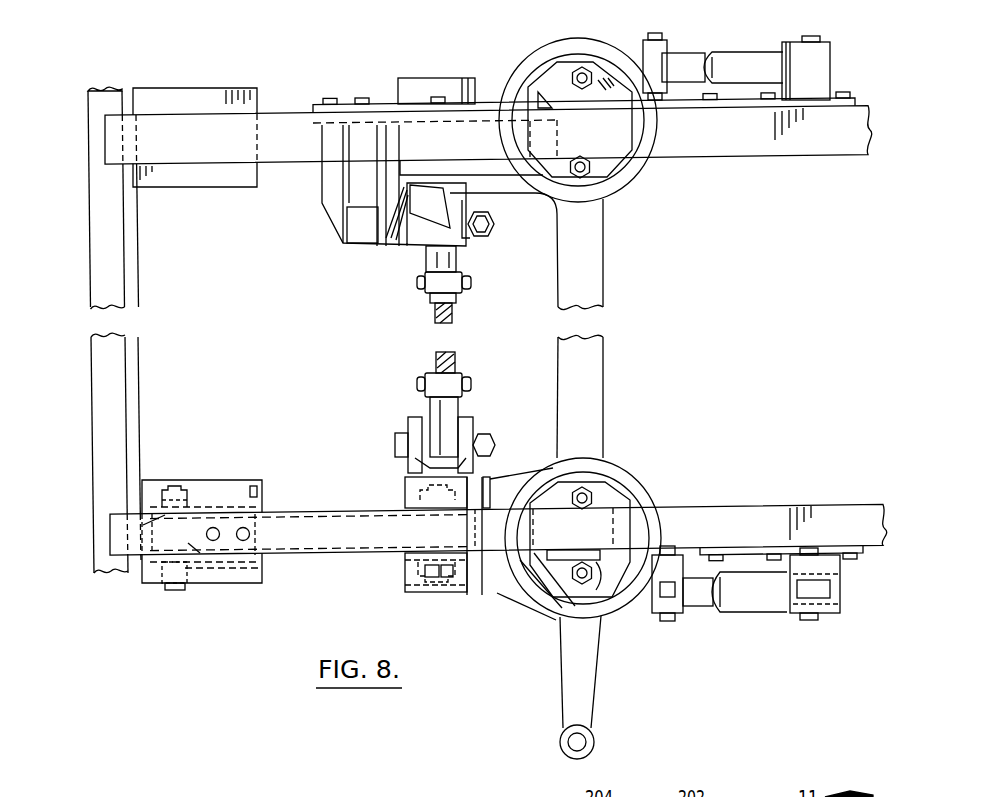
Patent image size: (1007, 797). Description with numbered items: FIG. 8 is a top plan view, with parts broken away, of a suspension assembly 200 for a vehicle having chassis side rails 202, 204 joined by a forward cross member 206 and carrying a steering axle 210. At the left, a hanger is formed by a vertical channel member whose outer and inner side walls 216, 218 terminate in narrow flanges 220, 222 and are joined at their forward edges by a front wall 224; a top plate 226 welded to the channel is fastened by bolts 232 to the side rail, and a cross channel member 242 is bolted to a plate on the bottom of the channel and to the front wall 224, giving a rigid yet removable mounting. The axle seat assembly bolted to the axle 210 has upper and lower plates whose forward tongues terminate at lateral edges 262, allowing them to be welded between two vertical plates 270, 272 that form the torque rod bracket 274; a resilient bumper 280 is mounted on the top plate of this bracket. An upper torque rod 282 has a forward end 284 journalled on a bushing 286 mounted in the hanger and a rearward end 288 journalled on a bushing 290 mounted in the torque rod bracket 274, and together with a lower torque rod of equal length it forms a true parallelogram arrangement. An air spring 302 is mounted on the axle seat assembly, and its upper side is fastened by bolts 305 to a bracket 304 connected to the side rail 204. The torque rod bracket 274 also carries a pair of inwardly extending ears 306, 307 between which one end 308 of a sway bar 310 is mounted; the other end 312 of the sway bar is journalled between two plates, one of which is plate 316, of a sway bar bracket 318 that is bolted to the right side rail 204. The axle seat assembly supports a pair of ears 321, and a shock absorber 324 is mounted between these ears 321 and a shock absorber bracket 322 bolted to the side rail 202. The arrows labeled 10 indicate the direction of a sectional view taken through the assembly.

The section line 10- 10 is at (87, 303).
The suspension assembly 200 is at (327, 586).
The chassis side rail 202 is at (728, 512).
The chassis side rail 204 is at (710, 148).
The forward cross member 206 is at (93, 307).
The steering axle 210 is at (604, 320).
The outer side wall 216 is at (215, 568).
The inner side wall 218 is at (213, 503).
The narrow flange 220 is at (250, 573).
The narrow flange 222 is at (257, 492).
The front wall 224 is at (140, 543).
The top plate 226 is at (202, 488).
The bolts 232 is at (248, 533).
The cross channel member 242 is at (133, 358).
The lateral edges 262 is at (476, 600).
The vertical plate 270 is at (400, 577).
The vertical plate 272 is at (407, 480).
The torque rod bracket 274 is at (412, 604).
The resilient bumper 280 is at (437, 590).
The upper torque rod 282 is at (405, 508).
The forward end 284 is at (170, 527).
The bushing 286 is at (168, 592).
The rearward end 288 is at (403, 553).
The bushing 290 is at (452, 595).
The air spring 302 is at (622, 184).
The bracket 304 is at (539, 606).
The bolts 305 is at (594, 588).
The ear 306 is at (430, 418).
The ear 307 is at (487, 428).
The end of sway bar 308 is at (430, 400).
The sway bar 310 is at (453, 318).
The other end of sway bar 312 is at (462, 260).
The plate 316 is at (467, 203).
The sway bar bracket 318 is at (414, 255).
The ears 321 is at (661, 613).
The shock absorber bracket 322 is at (827, 615).
The shock absorber 324 is at (751, 40).